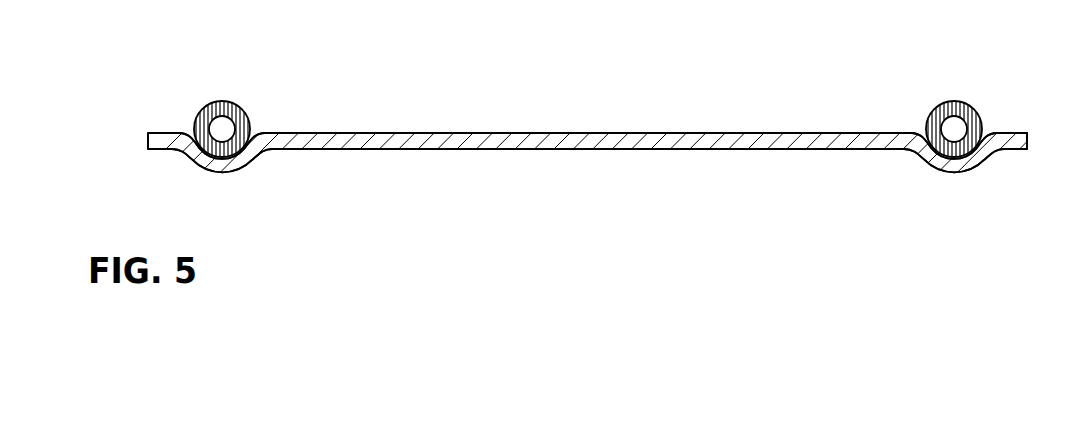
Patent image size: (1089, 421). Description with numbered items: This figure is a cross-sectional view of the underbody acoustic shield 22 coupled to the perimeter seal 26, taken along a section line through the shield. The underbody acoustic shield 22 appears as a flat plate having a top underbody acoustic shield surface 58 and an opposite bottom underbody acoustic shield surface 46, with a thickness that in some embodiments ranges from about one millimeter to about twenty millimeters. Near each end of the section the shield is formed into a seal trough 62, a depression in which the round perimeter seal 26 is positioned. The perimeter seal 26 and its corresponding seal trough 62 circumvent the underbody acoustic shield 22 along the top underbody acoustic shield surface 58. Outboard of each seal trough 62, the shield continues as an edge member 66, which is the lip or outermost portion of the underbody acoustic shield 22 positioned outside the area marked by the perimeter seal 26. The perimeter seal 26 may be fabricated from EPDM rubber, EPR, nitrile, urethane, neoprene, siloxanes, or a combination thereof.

The underbody acoustic shield 22 is at (577, 140).
The top underbody acoustic shield surface 58 is at (551, 132).
The bottom underbody acoustic shield surface 46 is at (442, 150).
The edge member 66 is at (163, 138).
The seal trough 62 is at (217, 167).
The perimeter seal 26 is at (223, 102).